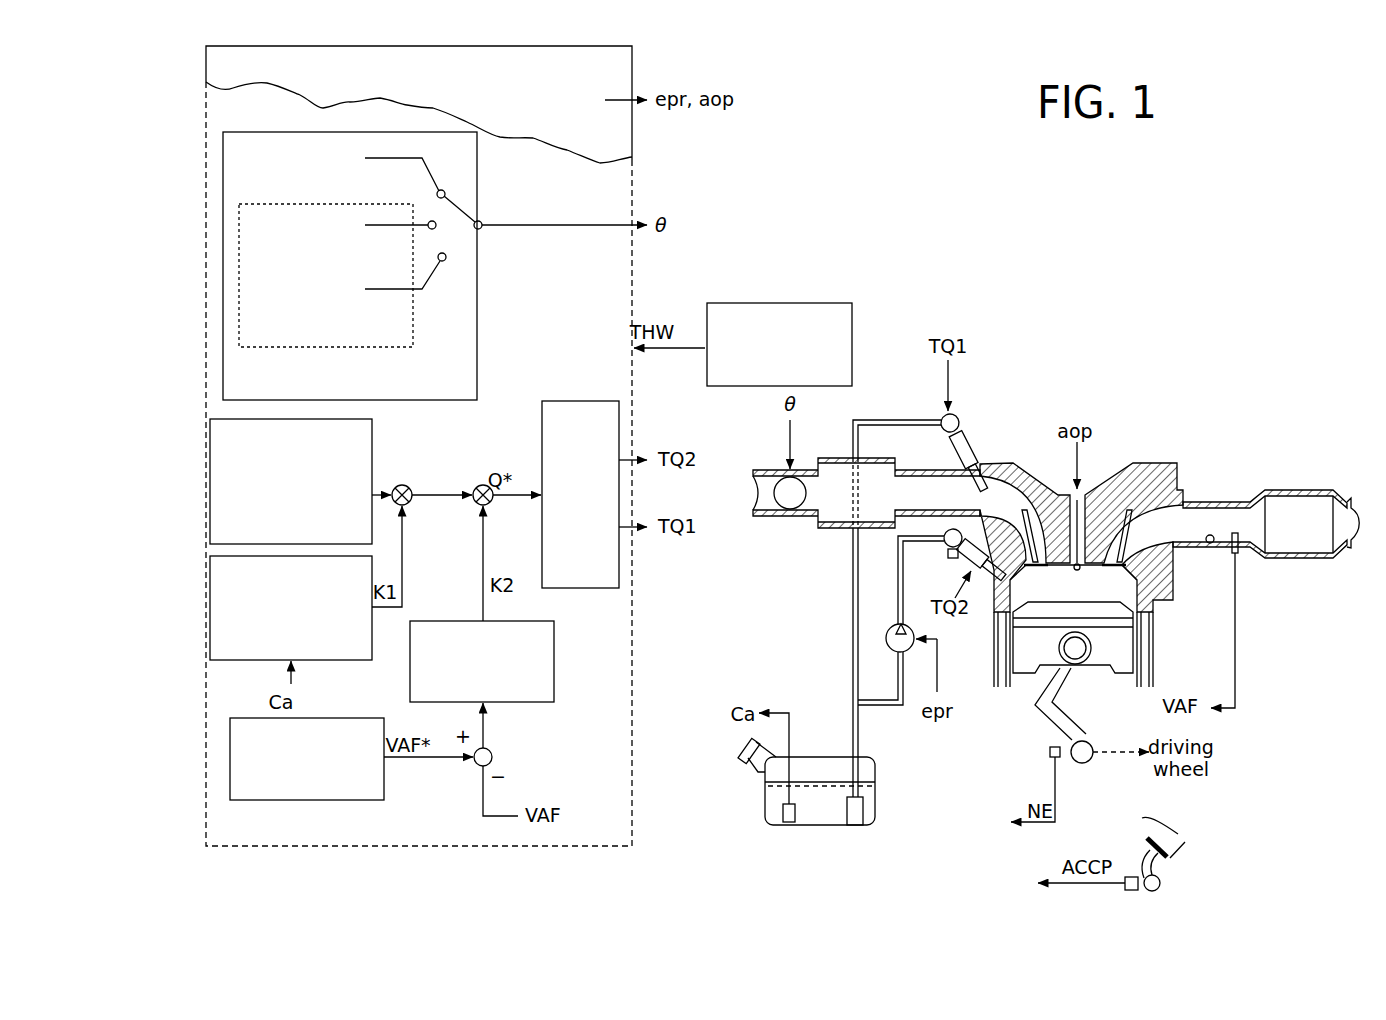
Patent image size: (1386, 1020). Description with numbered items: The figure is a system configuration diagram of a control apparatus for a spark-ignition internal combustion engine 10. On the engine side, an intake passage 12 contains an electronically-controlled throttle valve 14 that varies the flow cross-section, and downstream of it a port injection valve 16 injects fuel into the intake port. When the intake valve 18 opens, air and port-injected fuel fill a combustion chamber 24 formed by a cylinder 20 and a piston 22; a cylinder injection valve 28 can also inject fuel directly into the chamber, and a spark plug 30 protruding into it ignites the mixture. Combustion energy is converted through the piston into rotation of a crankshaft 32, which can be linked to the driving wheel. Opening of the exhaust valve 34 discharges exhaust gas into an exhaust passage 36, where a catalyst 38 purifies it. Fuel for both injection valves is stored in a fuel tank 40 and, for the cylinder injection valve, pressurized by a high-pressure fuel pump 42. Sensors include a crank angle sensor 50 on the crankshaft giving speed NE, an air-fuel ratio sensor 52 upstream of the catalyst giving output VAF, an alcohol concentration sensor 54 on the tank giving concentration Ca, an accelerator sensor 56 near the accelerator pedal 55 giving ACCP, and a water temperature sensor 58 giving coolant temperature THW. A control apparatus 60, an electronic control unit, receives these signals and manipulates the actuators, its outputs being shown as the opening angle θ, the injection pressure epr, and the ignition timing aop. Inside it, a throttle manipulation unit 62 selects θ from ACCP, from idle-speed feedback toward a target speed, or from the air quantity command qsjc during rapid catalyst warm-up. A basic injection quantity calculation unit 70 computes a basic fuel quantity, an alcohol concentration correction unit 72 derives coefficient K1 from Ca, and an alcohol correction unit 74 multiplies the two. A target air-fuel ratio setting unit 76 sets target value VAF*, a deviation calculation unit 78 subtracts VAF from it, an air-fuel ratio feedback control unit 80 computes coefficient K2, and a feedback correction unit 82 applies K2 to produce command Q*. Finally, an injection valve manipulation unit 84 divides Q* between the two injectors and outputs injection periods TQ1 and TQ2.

The spark-ignition internal combustion engine 10 is at (1251, 371).
The intake passage 12 is at (766, 516).
The throttle valve 14 is at (800, 480).
The port injection valve 16 is at (977, 445).
The intake valve 18 is at (1021, 533).
The cylinder 20 is at (988, 640).
The piston 22 is at (1133, 648).
The combustion chamber 24 is at (1130, 590).
The cylinder injection valve 28 is at (956, 566).
The spark plug 30 is at (1085, 517).
The crankshaft 32 is at (1089, 742).
The exhaust valve 34 is at (1128, 556).
The exhaust passage 36 is at (1210, 547).
The catalyst 38 is at (1312, 558).
The fuel tank 40 is at (876, 765).
The high-pressure fuel pump 42 is at (893, 624).
The crank angle sensor 50 is at (1047, 752).
The air-fuel ratio sensor 52 is at (1240, 556).
The alcohol concentration sensor 54 is at (789, 826).
The accelerator pedal 55 is at (1172, 862).
The accelerator sensor 56 is at (1130, 875).
The water temperature sensor 58 is at (797, 303).
The control apparatus 60 is at (633, 50).
The throttle manipulation unit 62 is at (477, 372).
The basic injection quantity calculation unit 70 is at (373, 421).
The alcohol concentration correction unit 72 is at (254, 660).
The alcohol correction unit 74 is at (402, 485).
The target air-fuel ratio setting unit 76 is at (348, 718).
The deviation calculation unit 78 is at (492, 757).
The air-fuel ratio feedback control unit 80 is at (554, 659).
The feedback correction unit 82 is at (483, 485).
The injection valve manipulation unit 84 is at (588, 401).